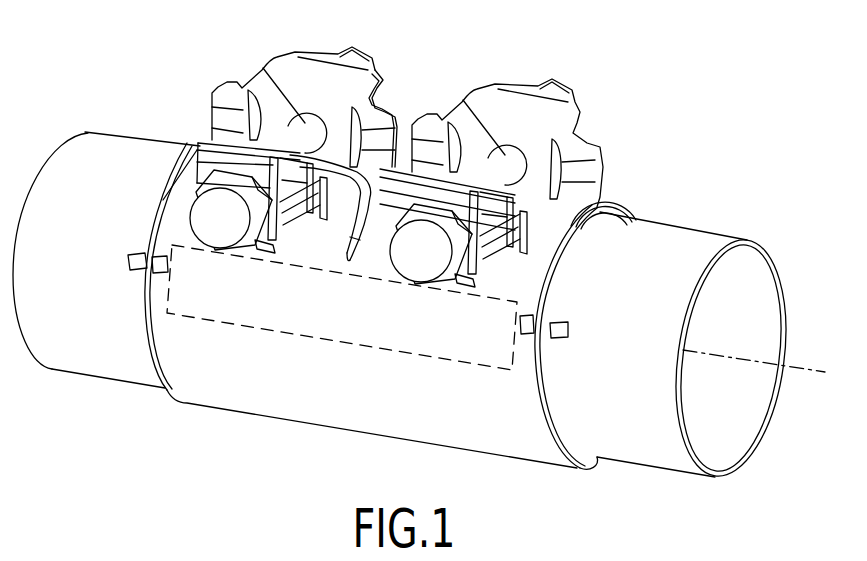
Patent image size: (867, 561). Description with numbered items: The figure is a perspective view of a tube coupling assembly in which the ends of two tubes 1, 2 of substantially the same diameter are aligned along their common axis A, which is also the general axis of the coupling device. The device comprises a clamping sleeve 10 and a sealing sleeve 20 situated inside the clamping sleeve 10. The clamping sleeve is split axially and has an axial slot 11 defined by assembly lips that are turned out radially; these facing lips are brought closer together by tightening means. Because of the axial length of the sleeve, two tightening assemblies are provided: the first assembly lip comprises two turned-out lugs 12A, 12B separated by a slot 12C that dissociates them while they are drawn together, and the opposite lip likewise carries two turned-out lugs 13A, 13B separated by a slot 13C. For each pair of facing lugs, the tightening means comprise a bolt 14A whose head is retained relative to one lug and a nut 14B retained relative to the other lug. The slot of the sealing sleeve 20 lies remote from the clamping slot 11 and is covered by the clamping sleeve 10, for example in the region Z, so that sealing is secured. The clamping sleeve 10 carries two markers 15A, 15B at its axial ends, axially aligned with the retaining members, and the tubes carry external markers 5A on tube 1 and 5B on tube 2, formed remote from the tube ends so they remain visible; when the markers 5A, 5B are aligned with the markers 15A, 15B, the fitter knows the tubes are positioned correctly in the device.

The tube 1 is at (91, 134).
The tube 2 is at (686, 238).
The clamping sleeve 10 is at (285, 400).
The axial slot 11 is at (196, 120).
The turned-out lug 12A is at (320, 80).
The turned-out lug 12B is at (503, 103).
The slot 12C is at (397, 130).
The turned-out lug 13A is at (197, 133).
The turned-out lug 13B is at (507, 258).
The slot 13C is at (348, 266).
The bolt 14A is at (263, 66).
The nut 14B is at (353, 52).
The marker 15A is at (157, 270).
The marker 15B is at (520, 320).
The external marker 5A is at (135, 258).
The external marker 5B is at (560, 335).
The sealing sleeve 20 is at (573, 213).
The region Z is at (260, 329).
The axis A is at (825, 373).